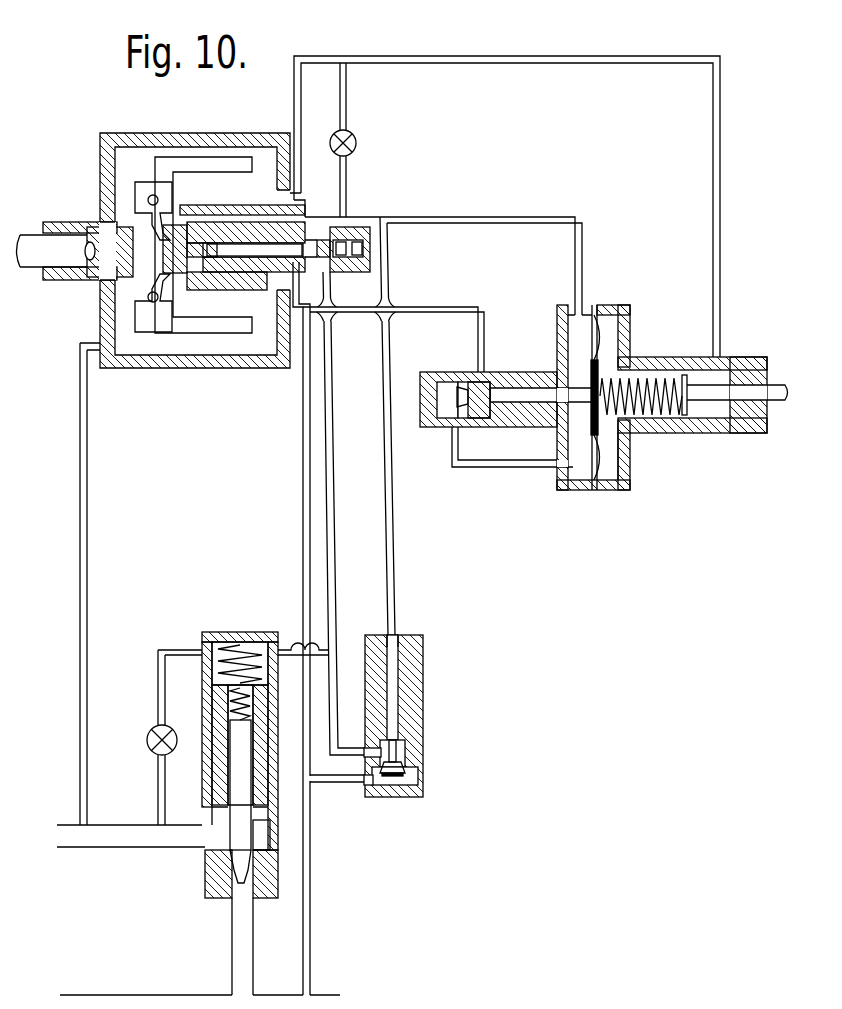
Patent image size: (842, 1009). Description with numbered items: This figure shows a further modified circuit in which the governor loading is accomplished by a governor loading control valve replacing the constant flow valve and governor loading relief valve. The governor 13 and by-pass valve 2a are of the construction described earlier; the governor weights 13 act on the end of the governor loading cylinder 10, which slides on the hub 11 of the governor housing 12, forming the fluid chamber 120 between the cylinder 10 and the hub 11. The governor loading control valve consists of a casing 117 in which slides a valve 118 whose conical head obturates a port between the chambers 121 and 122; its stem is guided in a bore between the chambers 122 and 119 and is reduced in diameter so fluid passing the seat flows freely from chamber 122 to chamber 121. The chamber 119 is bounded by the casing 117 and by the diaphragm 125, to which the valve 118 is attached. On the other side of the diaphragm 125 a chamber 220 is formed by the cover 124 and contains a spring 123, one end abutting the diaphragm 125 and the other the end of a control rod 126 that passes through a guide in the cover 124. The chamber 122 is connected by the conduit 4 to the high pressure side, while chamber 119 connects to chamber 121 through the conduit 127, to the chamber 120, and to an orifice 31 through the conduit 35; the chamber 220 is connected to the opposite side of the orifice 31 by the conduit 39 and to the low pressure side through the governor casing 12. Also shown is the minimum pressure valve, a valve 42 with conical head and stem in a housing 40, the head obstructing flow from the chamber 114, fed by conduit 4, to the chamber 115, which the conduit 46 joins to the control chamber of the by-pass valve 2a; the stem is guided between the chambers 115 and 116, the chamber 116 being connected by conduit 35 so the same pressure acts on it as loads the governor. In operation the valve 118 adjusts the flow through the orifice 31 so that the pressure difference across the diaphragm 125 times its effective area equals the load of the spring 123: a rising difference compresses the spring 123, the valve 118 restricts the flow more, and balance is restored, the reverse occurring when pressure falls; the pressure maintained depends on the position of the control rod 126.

The by-pass valve 2a is at (240, 822).
The conduit 4 is at (455, 307).
The governor loading cylinder 10 is at (210, 209).
The hub 11 is at (250, 280).
The governor housing 12 is at (220, 135).
The governor weights 13 is at (185, 168).
The orifice 31 is at (357, 143).
The conduit 35 is at (493, 217).
The conduit 39 is at (508, 57).
The housing 40 is at (420, 718).
The valve 42 is at (393, 685).
The conduit 46 is at (347, 752).
The chamber 114 is at (405, 778).
The chamber 115 is at (405, 760).
The chamber 116 is at (395, 650).
The casing 117 is at (478, 380).
The valve 118 is at (532, 395).
The chamber 119 is at (573, 477).
The fluid chamber 120 is at (195, 282).
The chamber 121 is at (447, 390).
The chamber 122 is at (478, 410).
The spring 123 is at (650, 418).
The cover 124 is at (755, 365).
The diaphragm 125 is at (601, 333).
The control rod 126 is at (777, 398).
The conduit 127 is at (482, 467).
The chamber 220 is at (622, 472).